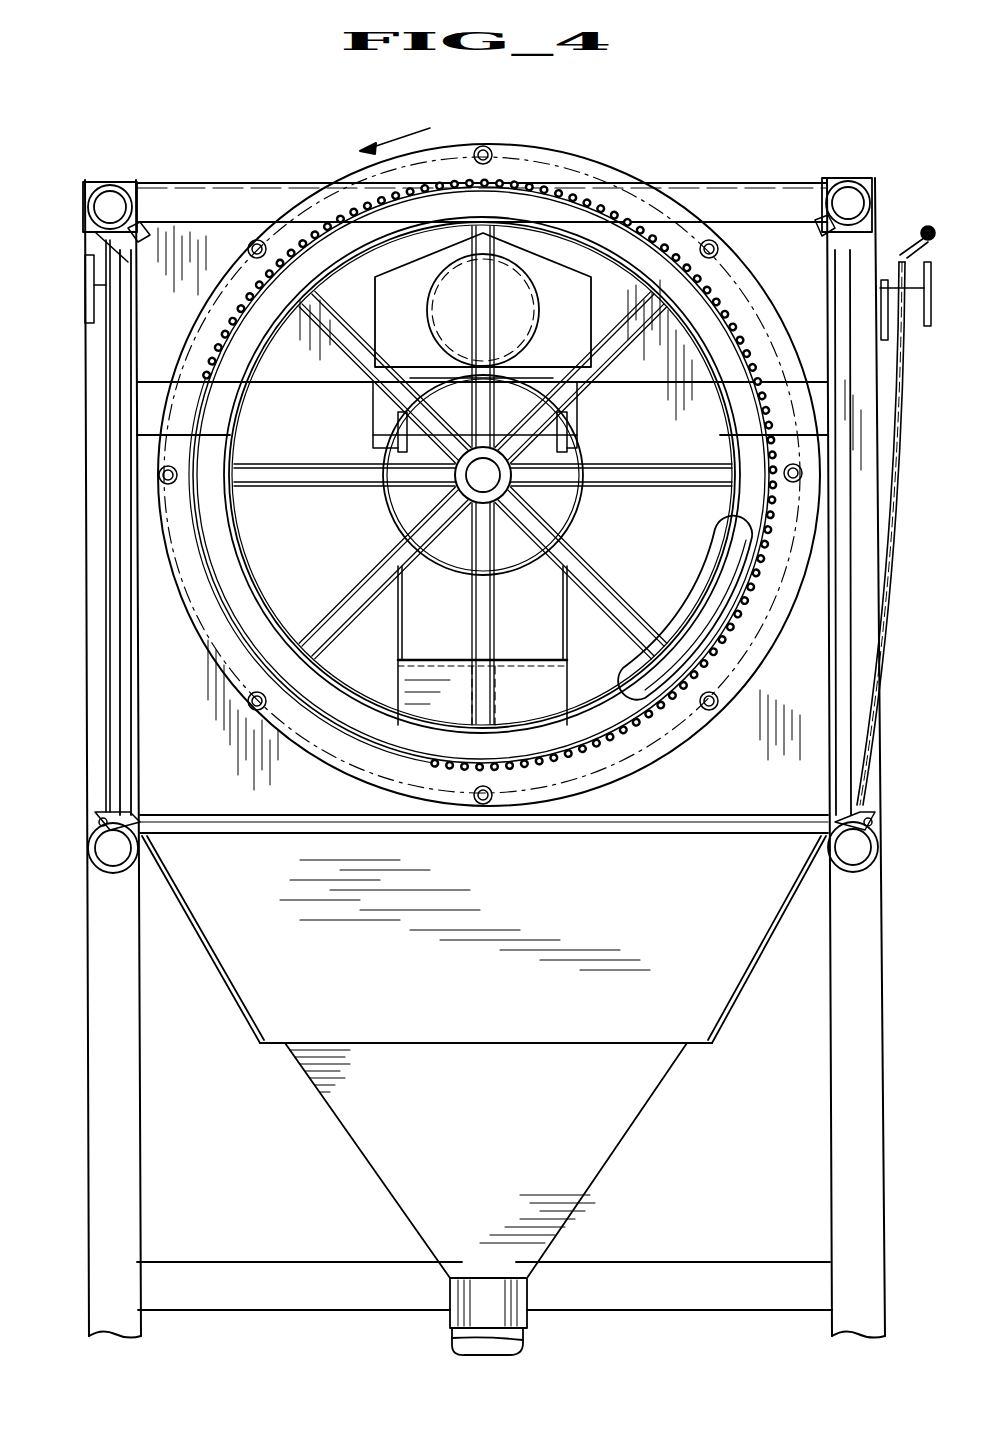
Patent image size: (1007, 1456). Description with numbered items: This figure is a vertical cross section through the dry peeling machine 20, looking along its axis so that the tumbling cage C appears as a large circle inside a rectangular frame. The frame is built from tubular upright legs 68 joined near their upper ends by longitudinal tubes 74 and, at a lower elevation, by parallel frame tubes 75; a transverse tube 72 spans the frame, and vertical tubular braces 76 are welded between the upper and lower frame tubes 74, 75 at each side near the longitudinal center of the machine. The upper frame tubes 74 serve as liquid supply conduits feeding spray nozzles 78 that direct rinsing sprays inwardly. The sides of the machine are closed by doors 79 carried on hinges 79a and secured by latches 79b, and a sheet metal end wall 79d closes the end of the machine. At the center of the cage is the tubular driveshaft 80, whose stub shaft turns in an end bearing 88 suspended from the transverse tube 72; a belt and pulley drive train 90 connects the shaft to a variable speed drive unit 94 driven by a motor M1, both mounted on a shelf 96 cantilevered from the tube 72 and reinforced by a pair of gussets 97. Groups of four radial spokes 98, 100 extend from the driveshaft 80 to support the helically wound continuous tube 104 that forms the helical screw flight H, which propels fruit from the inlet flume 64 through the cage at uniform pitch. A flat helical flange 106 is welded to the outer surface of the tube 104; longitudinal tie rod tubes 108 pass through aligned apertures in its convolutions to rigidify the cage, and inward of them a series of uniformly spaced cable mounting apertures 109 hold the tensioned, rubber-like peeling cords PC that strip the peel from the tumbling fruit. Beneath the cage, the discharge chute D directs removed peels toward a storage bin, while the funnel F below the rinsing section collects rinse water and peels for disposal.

The dry peeling machine 20 is at (716, 112).
The inlet flume 64 is at (398, 645).
The tubular upright legs 68 is at (140, 1115).
The transverse tube 72 is at (657, 406).
The longitudinal tubes 74 is at (110, 184).
The frame tubes 75 is at (90, 862).
The vertical tubular braces 76 is at (140, 790).
The spray nozzles 78 is at (142, 232).
The doors 79 is at (105, 622).
The hinges 79a is at (97, 812).
The latches 79b is at (88, 318).
The sheet metal end wall 79d is at (318, 368).
The central tubular driveshaft 80 is at (455, 483).
The end bearing 88 is at (512, 485).
The belt and pulley drive train 90 is at (392, 514).
The variable speed drive unit 94 is at (538, 355).
The shelf 96 is at (428, 365).
The gussets 97 is at (398, 430).
The radial spokes 98 is at (372, 316).
The radial spokes 100 is at (490, 292).
The helically wound continuous tube 104 is at (240, 523).
The helical flange 106 is at (515, 148).
The longitudinal tie rod tubes 108 is at (483, 146).
The cable mounting apertures 109 is at (241, 306).
The tumbling cage C is at (578, 158).
The peeling cords PC is at (562, 190).
The helical screw flight H is at (705, 572).
The motor M1 is at (440, 290).
The discharge chute D is at (496, 983).
The funnel F is at (494, 1097).